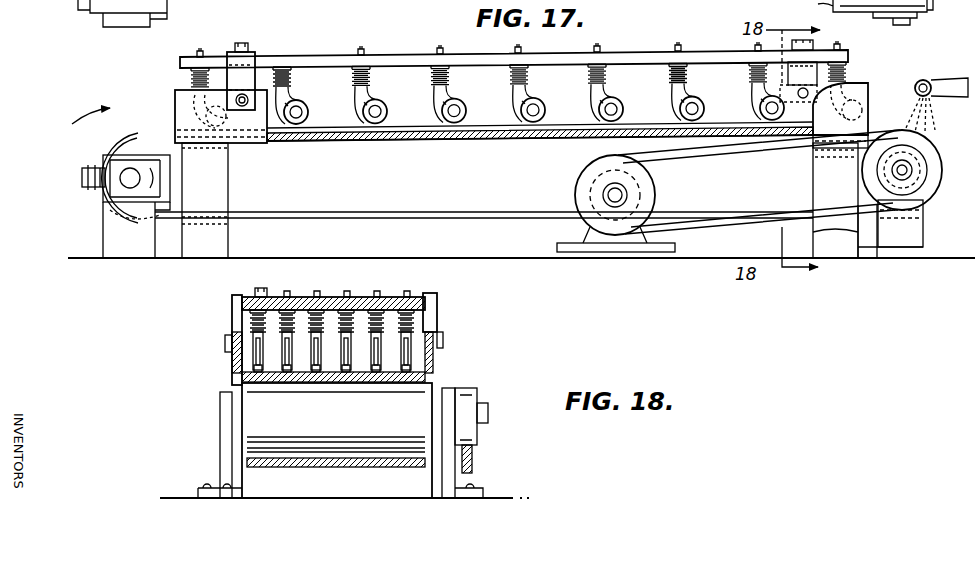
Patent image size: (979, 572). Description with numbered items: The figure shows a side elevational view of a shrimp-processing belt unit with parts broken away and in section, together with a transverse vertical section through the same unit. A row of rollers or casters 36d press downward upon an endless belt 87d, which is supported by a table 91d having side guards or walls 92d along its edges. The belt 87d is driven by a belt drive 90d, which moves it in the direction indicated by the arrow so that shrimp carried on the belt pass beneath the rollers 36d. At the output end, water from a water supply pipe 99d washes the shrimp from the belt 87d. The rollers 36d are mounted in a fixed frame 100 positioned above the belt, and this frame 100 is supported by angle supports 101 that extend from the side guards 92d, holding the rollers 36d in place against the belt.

In FIG. 17, the rollers 36d is at (507, 140).
In FIG. 18, the rollers 36d is at (288, 360).
In FIG. 17, the endless belt 87d is at (326, 123).
In FIG. 18, the endless belt 87d is at (323, 387).
In FIG. 17, the belt drive 90d is at (708, 160).
In FIG. 18, the belt drive 90d is at (472, 460).
In FIG. 17, the table 91d is at (363, 140).
In FIG. 18, the table 91d is at (298, 387).
In FIG. 17, the side guards 92d is at (178, 96).
In FIG. 18, the side guards 92d is at (437, 358).
In FIG. 17, the water supply pipe 99d is at (955, 51).
In FIG. 17, the fixed frame 100 is at (405, 62).
In FIG. 18, the fixed frame 100 is at (363, 293).
In FIG. 17, the angle supports 101 is at (243, 65).
In FIG. 18, the angle supports 101 is at (437, 313).